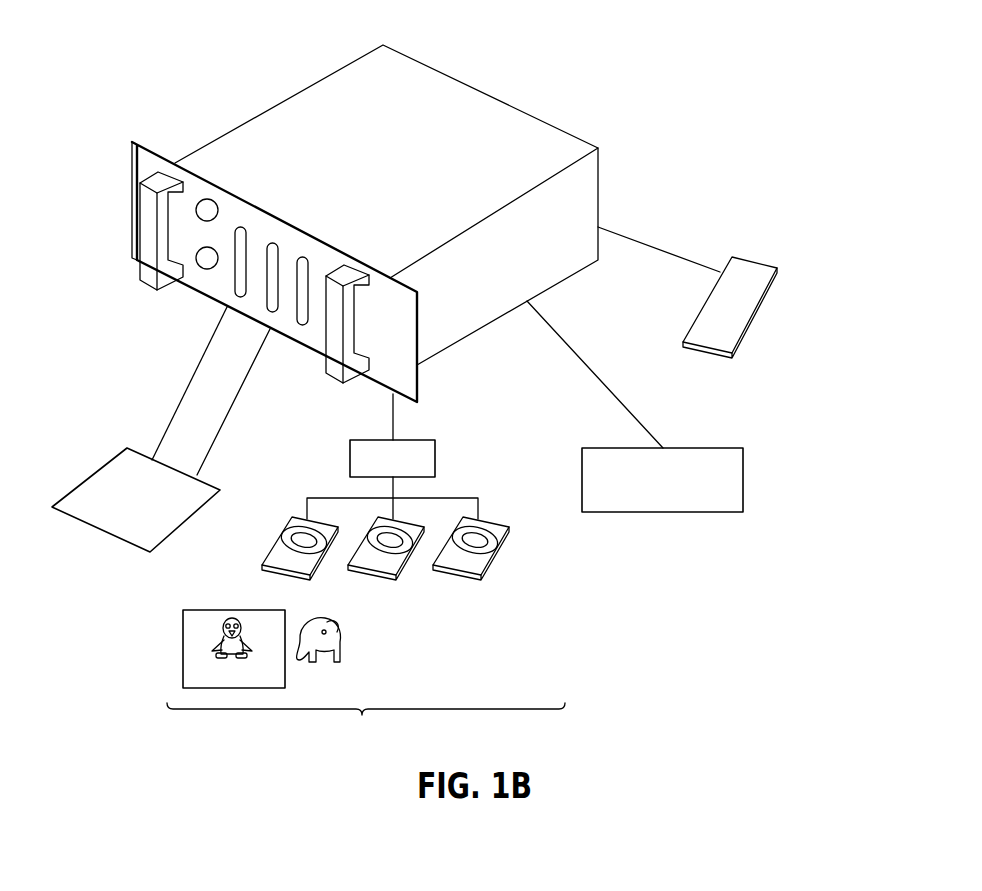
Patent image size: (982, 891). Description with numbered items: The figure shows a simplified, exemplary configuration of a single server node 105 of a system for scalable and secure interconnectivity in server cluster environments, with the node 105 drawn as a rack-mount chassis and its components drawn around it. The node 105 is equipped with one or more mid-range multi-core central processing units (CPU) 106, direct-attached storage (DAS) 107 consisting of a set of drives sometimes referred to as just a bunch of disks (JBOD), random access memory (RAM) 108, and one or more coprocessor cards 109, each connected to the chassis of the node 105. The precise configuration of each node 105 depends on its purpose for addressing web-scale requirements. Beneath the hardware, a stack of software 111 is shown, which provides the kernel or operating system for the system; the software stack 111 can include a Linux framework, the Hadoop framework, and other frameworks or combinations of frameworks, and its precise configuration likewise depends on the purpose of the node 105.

The node 105 is at (248, 118).
The central processing unit 106 is at (97, 470).
The direct-attached storage 107 is at (365, 440).
The random access memory 108 is at (712, 448).
The coprocessor card 109 is at (757, 263).
The software stack 111 is at (366, 677).